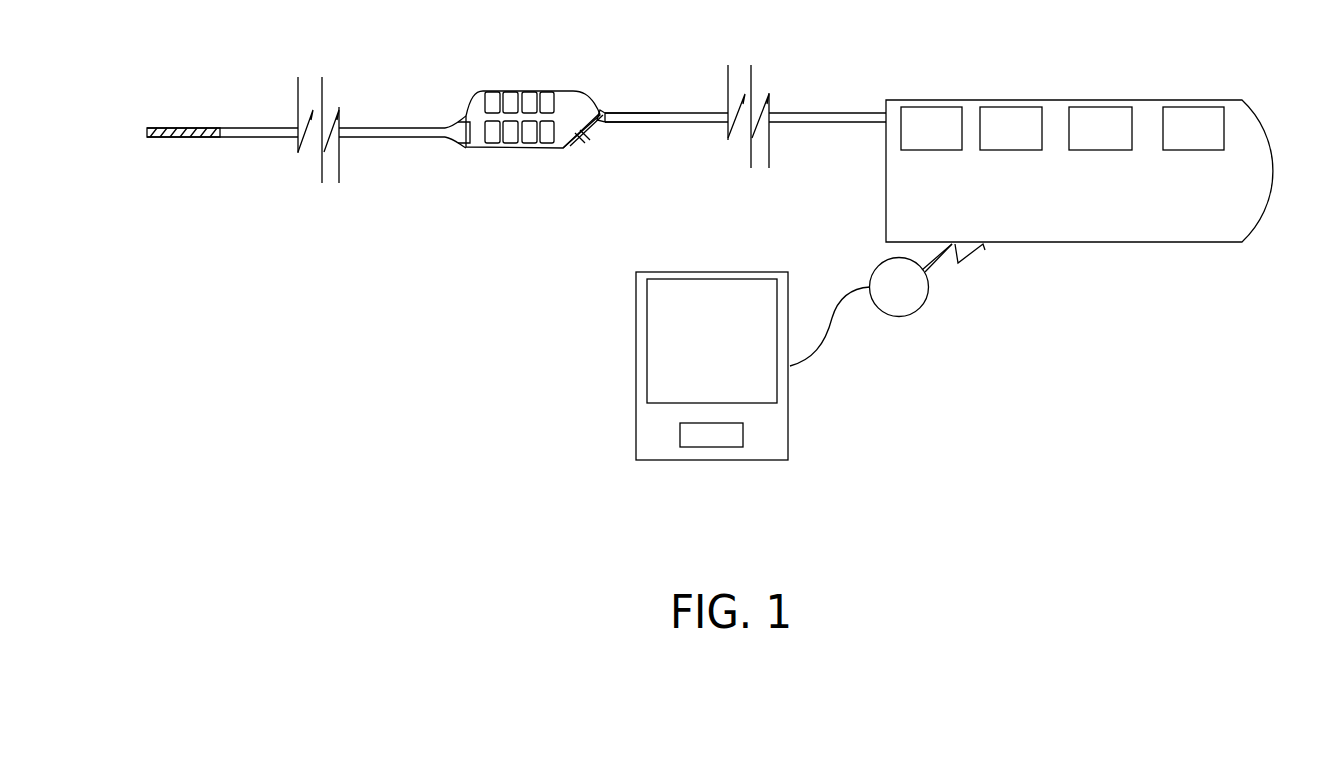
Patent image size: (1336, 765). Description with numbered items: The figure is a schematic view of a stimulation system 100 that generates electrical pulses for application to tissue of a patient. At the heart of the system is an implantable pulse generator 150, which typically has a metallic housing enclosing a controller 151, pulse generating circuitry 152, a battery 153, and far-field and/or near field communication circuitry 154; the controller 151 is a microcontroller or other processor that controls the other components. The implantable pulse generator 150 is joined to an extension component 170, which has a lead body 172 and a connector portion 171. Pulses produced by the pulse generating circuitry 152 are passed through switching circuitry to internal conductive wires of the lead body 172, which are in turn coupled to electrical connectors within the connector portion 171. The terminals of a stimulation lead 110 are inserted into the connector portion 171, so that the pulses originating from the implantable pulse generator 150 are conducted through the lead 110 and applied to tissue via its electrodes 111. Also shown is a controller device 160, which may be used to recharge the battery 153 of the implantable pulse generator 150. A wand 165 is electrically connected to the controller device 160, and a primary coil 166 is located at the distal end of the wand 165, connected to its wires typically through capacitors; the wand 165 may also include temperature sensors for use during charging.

The stimulation system 100 is at (452, 347).
The stimulation lead 110 is at (250, 138).
The electrodes 111 is at (195, 138).
The implantable pulse generator 150 is at (1100, 242).
The controller 151 is at (907, 140).
The pulse generating circuitry 152 is at (987, 140).
The battery 153 is at (1076, 140).
The far-field and/or near field communication circuitry 154 is at (1169, 140).
The controller device 160 is at (745, 272).
The wand 165 is at (843, 295).
The coil 166 is at (897, 317).
The extension component 170 is at (602, 100).
The connector portion 171 is at (528, 88).
The lead body 172 is at (652, 125).